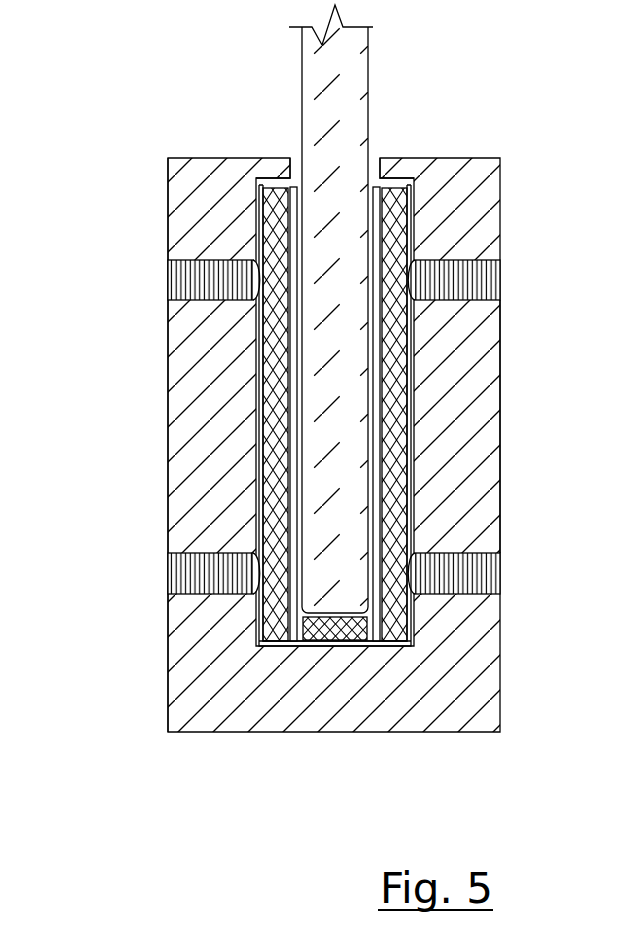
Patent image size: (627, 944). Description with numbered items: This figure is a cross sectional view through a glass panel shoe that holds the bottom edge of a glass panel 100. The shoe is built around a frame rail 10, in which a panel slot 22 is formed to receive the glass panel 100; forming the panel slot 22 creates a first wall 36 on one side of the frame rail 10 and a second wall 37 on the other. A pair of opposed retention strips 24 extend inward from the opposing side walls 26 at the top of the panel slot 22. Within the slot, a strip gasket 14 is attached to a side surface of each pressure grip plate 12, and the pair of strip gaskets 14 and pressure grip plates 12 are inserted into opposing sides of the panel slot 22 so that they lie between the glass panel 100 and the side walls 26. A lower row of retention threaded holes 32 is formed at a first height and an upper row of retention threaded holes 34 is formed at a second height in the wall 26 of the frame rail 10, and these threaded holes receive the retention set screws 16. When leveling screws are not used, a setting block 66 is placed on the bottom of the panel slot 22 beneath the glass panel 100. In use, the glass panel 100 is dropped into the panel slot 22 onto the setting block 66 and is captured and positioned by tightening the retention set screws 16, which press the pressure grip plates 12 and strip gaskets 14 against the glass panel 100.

The frame rail 10 is at (500, 378).
The pressure grip plate 12 is at (272, 422).
The strip gasket 14 is at (290, 372).
The retention set screw 16 is at (178, 578).
The panel slot 22 is at (283, 646).
The retention strip 24 is at (282, 157).
The side wall 26 is at (255, 477).
The lower row of retention threaded holes 32 is at (473, 595).
The upper row of retention threaded holes 34 is at (468, 260).
The first wall 36 is at (168, 209).
The second wall 37 is at (500, 322).
The setting block 66 is at (343, 646).
The glass panel 100 is at (370, 78).